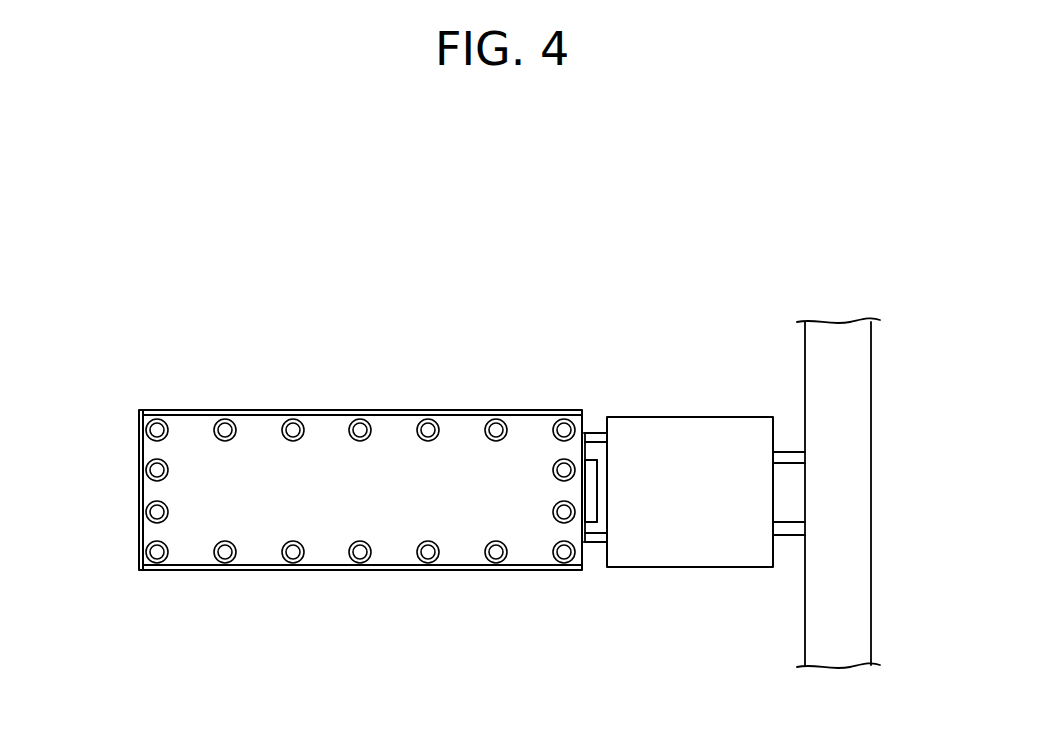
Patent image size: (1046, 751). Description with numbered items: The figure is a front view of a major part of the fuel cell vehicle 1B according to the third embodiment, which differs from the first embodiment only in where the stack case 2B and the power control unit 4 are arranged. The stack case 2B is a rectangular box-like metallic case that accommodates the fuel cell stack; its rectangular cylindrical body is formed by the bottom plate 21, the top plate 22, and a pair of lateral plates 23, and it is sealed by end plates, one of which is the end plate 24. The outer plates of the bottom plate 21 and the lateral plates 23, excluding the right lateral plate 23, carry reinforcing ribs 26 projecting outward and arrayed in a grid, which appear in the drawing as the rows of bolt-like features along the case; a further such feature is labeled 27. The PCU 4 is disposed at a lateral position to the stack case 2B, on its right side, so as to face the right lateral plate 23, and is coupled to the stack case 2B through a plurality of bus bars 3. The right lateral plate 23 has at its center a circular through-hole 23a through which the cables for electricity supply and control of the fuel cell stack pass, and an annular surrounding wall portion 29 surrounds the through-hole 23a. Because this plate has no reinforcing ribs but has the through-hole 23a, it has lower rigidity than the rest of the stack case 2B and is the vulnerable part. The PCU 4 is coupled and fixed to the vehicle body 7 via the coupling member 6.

The fuel cell vehicle 1B is at (712, 224).
The stack case 2B is at (189, 411).
The bus bars 3 is at (594, 432).
The power control unit (PCU) 4 is at (737, 430).
The coupling member 6 is at (786, 458).
The vehicle body 7 is at (858, 396).
The bottom plate 21 is at (452, 570).
The top plate 22 is at (327, 412).
The lateral plate 23 is at (140, 490).
The through-hole 23a is at (584, 505).
The end plate 24 is at (322, 505).
The reinforcing ribs 26 is at (397, 413).
The bolt 27 is at (228, 555).
The surrounding wall portion 29 is at (591, 471).